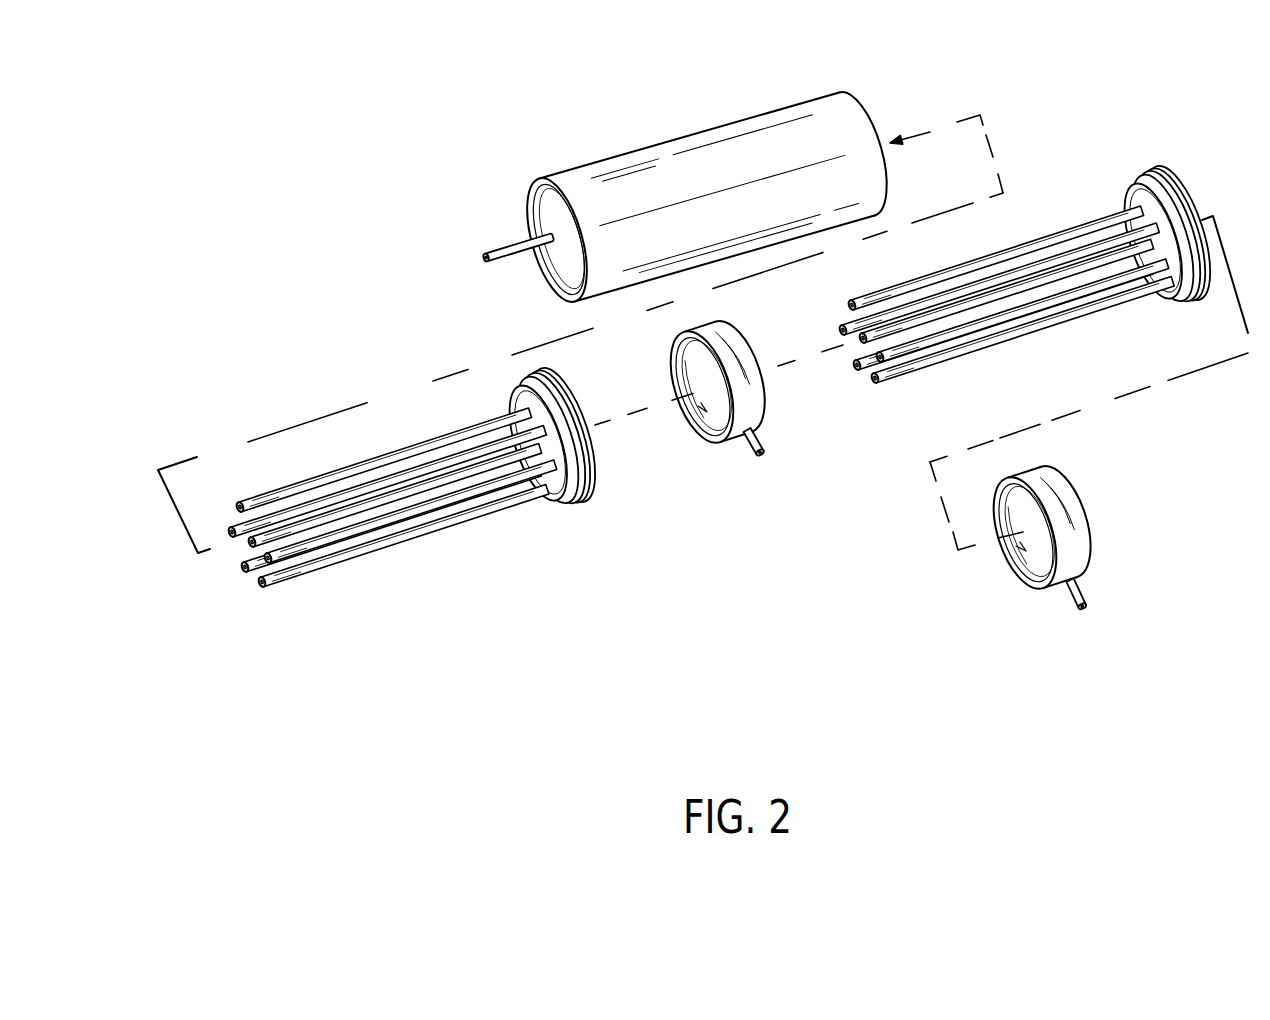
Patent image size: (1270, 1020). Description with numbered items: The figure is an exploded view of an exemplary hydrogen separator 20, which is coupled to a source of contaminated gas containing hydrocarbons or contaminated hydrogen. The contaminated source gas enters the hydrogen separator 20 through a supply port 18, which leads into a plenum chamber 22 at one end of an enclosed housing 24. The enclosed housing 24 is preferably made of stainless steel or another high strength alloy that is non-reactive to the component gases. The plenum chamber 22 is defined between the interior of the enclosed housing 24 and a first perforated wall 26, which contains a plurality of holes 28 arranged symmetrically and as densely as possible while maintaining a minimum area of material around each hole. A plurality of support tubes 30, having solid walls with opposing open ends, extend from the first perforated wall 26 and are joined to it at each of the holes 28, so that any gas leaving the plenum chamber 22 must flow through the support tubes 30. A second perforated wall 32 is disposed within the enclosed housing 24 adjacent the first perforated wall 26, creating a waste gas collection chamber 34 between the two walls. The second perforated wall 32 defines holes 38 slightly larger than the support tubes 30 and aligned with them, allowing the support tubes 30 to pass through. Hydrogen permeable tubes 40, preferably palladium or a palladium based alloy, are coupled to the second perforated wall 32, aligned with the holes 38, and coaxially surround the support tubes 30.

The supply port 18 is at (1087, 588).
The hydrogen separator 20 is at (333, 226).
The plenum chamber 22 is at (1010, 557).
The enclosed housing 24 is at (663, 157).
The first perforated wall 26 is at (1165, 298).
The holes 28 is at (1128, 203).
The support tubes 30 is at (965, 327).
The second perforated wall 32 is at (557, 500).
The waste gas collection chamber 34 is at (705, 432).
The holes 38 is at (526, 392).
The hydrogen permeable tubes 40 is at (427, 510).